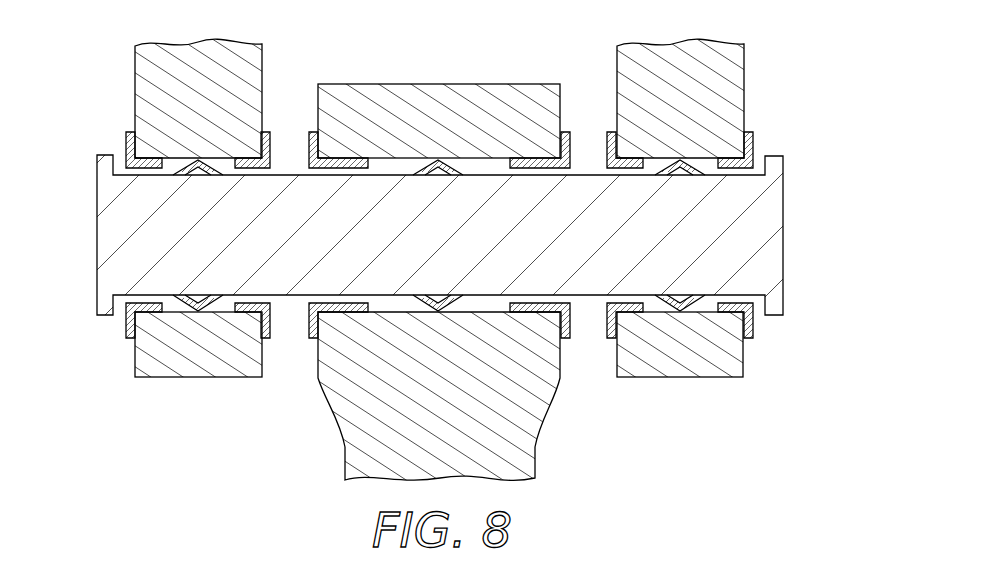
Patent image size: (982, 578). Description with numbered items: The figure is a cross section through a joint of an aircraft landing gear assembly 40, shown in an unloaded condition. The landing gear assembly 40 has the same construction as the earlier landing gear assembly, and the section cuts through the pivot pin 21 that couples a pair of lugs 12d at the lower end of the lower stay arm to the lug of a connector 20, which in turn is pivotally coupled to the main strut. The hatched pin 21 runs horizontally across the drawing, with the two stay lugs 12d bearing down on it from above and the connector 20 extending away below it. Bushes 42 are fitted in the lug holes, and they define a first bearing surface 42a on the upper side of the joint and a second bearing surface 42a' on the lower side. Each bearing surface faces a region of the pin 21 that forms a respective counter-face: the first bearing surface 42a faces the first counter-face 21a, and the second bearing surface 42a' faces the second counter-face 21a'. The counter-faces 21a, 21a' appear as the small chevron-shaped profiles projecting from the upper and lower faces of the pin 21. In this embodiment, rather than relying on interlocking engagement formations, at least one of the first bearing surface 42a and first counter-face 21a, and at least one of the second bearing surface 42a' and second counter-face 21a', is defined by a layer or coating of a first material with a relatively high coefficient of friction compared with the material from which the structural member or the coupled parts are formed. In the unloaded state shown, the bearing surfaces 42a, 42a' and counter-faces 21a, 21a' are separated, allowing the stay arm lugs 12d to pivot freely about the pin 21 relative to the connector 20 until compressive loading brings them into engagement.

The lug 12d is at (733, 73).
The connector 20 is at (342, 443).
The pivot pin 21 is at (105, 273).
The first counter-face 21a is at (439, 196).
The second counter-face 21a' is at (439, 274).
The aircraft landing gear assembly 40 is at (770, 385).
The bush 42 is at (309, 140).
The first bearing surface 42a is at (439, 180).
The second bearing surface 42a' is at (439, 288).